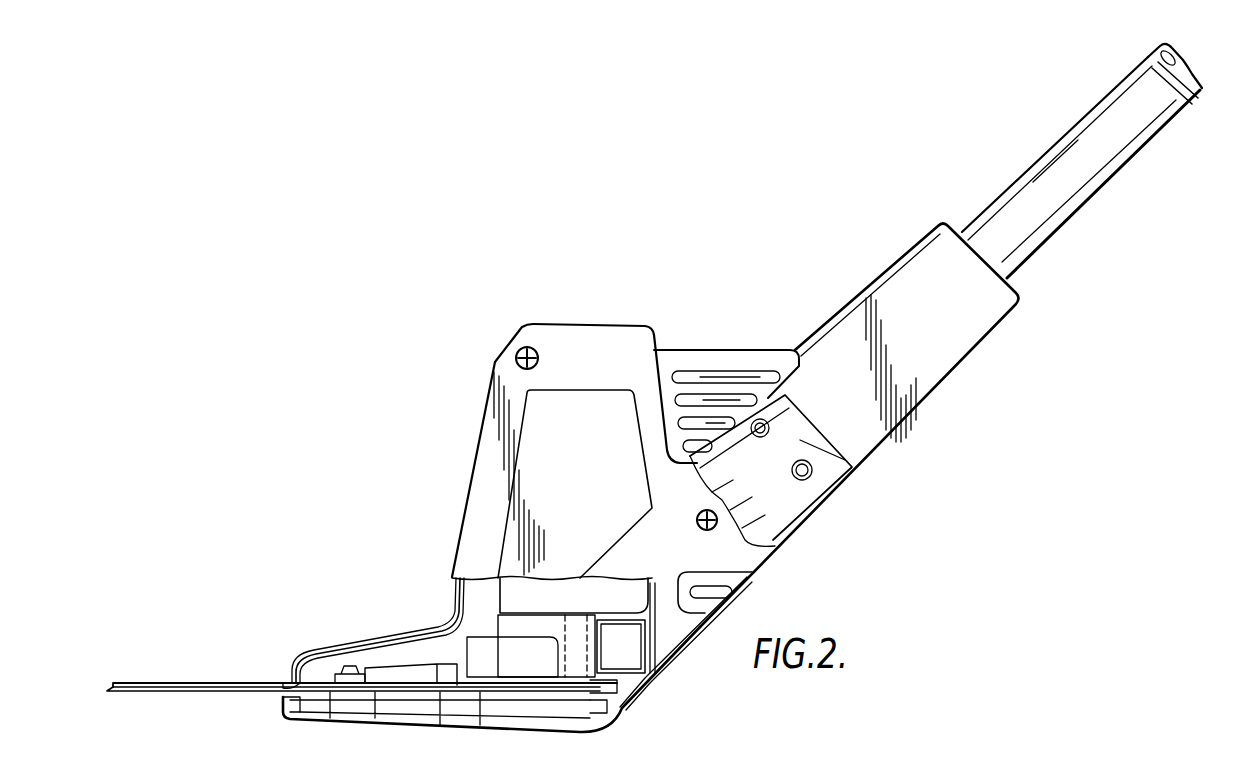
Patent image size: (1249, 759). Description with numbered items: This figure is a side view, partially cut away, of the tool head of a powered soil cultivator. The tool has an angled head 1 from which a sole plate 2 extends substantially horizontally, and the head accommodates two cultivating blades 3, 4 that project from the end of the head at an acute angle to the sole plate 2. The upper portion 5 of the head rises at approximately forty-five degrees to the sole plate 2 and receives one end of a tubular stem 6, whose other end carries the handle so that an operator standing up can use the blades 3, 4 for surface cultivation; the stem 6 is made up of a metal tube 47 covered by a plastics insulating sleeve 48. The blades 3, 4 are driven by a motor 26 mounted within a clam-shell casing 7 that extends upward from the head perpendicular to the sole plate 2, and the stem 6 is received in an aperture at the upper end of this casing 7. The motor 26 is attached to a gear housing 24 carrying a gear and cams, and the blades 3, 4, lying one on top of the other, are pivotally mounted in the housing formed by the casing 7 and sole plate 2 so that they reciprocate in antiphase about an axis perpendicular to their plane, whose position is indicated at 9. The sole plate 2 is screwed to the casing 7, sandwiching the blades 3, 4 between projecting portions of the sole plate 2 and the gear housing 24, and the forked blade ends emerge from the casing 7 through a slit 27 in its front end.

The angled head 1 is at (462, 442).
The sole plate 2 is at (590, 733).
The cultivating blade 3 is at (195, 683).
The cultivating blade 4 is at (233, 695).
The upper portion of the head 5 is at (943, 345).
The tubular stem 6 is at (1122, 185).
The casing 7 is at (437, 614).
The blade pivot axis 9 is at (352, 690).
The gear housing 24 is at (387, 672).
The motor 26 is at (581, 603).
The slit 27 is at (281, 677).
The metal tube 47 is at (1186, 75).
The plastics insulating sleeve 48 is at (1170, 118).